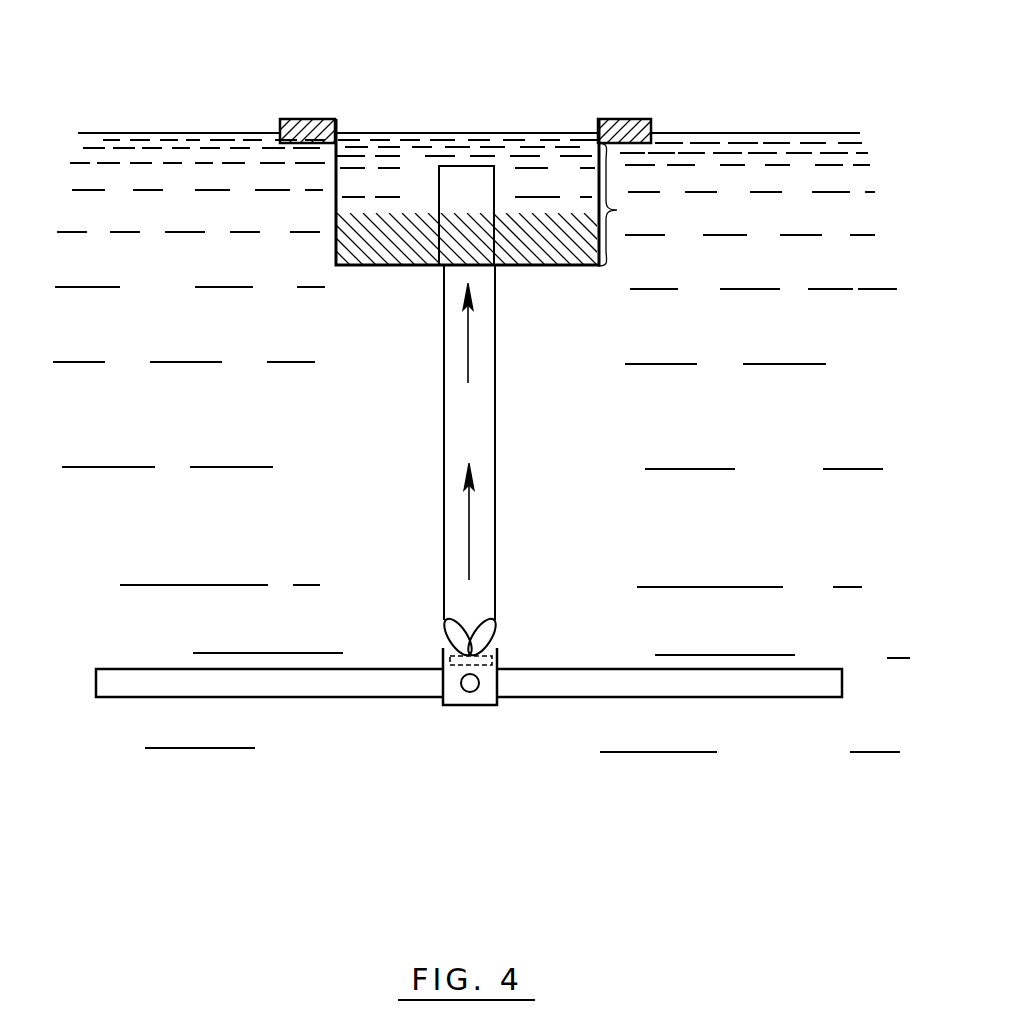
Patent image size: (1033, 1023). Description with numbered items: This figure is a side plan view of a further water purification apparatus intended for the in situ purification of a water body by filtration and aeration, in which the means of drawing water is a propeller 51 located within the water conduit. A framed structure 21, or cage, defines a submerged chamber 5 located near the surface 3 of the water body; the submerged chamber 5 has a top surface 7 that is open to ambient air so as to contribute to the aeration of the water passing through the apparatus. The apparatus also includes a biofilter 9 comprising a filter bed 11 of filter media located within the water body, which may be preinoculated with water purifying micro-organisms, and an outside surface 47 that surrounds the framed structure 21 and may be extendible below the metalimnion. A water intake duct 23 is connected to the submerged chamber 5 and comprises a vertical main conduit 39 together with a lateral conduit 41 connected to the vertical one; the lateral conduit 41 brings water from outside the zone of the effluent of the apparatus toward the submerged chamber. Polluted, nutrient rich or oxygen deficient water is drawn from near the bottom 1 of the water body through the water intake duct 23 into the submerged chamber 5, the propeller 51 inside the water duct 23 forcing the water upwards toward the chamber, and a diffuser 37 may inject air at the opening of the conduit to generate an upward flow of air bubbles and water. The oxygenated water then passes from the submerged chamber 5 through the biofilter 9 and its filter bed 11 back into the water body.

The bottom of the water body 1 is at (180, 719).
The surface of the water body 3 is at (93, 147).
The submerged chamber 5 is at (335, 256).
The top surface of the submerged chamber 7 is at (473, 133).
The biofilter 9 is at (619, 204).
The filter bed 11 is at (337, 202).
The framed structure 21 is at (318, 178).
The water intake duct 23 is at (425, 388).
The diffuser 37 is at (495, 661).
The vertical main conduit 39 is at (476, 439).
The lateral conduit 41 is at (470, 690).
The outside surface 47 is at (333, 240).
The propeller 51 is at (455, 633).